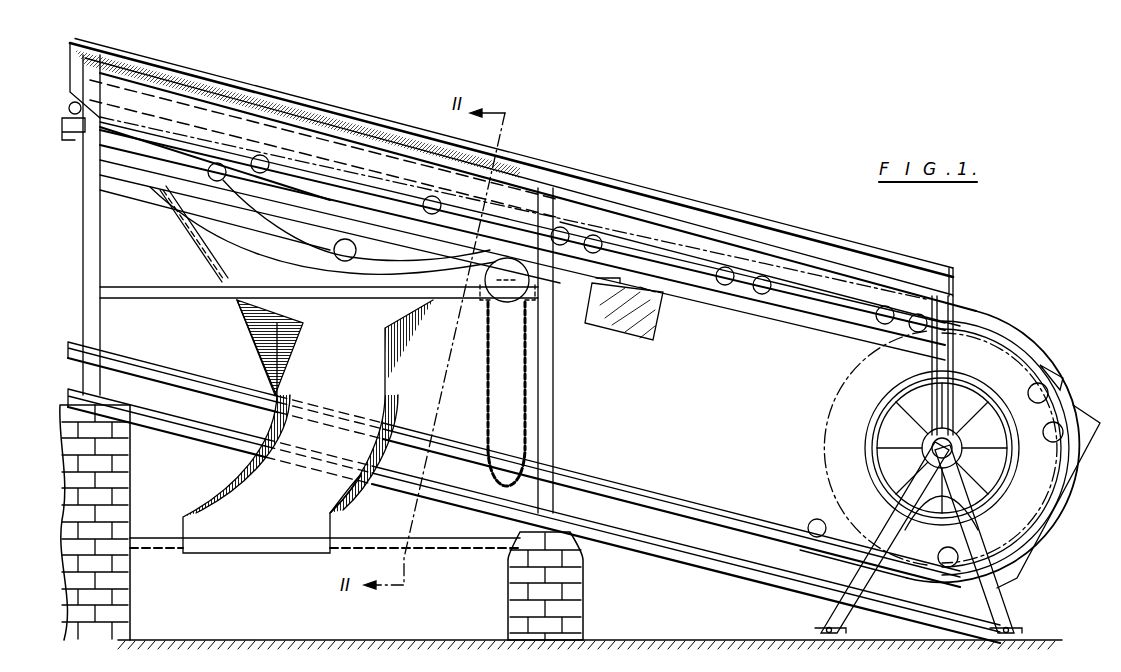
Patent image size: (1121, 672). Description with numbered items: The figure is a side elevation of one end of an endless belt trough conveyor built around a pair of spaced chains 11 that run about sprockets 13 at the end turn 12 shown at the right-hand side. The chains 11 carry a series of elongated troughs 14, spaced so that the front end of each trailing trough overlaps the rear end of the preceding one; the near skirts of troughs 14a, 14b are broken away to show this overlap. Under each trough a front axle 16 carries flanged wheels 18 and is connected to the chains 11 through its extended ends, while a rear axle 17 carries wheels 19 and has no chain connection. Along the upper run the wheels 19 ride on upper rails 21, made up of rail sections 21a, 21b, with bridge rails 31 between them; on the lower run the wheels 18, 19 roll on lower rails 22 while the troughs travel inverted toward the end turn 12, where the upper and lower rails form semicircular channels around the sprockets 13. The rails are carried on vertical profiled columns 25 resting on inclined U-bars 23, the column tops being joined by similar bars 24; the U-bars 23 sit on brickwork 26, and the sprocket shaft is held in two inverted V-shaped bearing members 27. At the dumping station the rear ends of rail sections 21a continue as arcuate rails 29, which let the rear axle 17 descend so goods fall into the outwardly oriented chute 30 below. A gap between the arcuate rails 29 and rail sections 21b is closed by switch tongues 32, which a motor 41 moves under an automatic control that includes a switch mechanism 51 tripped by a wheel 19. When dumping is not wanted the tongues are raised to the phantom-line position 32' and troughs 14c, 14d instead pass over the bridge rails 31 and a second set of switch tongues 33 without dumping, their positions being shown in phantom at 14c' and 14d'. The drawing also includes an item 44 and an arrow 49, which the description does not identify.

The chains 11 is at (790, 305).
The end turn 12 is at (1046, 353).
The sprockets 13 is at (942, 448).
The troughs 14 is at (952, 590).
The trough 14a is at (570, 178).
The trough 14b is at (688, 212).
The trough 14c is at (223, 138).
The phantom-line position of trough 14c' is at (257, 171).
The trough 14d is at (325, 120).
The phantom-line position of trough 14d' is at (325, 134).
The front axle 16 is at (600, 240).
The rear axle 17 is at (725, 270).
The front flanged wheels 18 is at (440, 190).
The rear flanged wheels 19 is at (758, 294).
The upper rails 21 is at (836, 328).
The rail section 21a is at (88, 128).
The rail section 21b is at (722, 300).
The lower rails 22 is at (655, 500).
The inclined U-bars 23 is at (706, 570).
The upper bars 24 is at (858, 243).
The vertical profiled columns 25 is at (83, 233).
The brickwork 26 is at (128, 608).
The bearing members 27 is at (1003, 605).
The arcuate rails 29 is at (268, 230).
The chute 30 is at (380, 380).
The bridge rails 31 is at (395, 160).
The switch tongues 32 is at (540, 166).
The raised position of switch tongues 32' is at (514, 156).
The second switch tongues 33 is at (168, 198).
The motor 41 is at (514, 296).
The chains 44 is at (486, 415).
The direction arrow 49 is at (628, 124).
The switch mechanism 51 is at (648, 340).